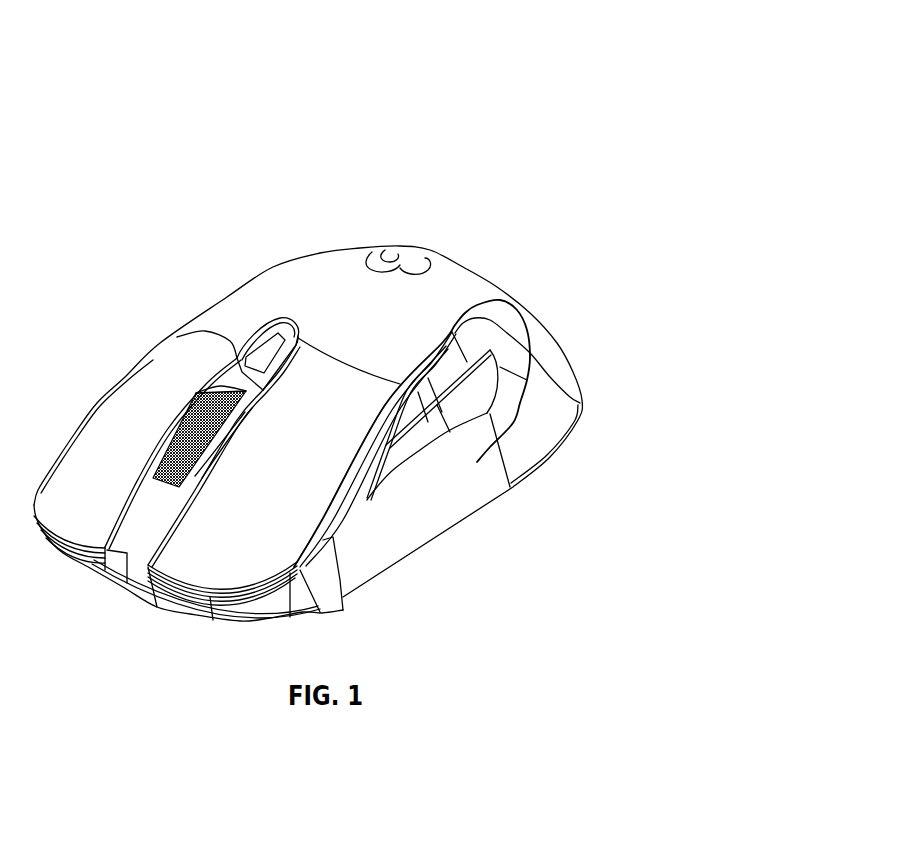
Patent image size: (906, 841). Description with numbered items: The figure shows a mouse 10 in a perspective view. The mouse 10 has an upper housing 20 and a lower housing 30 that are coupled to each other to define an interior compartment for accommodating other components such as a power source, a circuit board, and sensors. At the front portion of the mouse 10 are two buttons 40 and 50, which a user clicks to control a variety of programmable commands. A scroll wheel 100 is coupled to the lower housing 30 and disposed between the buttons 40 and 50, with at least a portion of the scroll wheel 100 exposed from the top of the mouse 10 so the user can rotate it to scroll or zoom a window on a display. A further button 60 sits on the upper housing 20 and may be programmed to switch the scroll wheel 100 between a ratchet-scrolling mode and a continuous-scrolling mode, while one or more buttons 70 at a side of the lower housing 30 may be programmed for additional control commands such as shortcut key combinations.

The mouse 10 is at (440, 98).
The upper housing 20 is at (267, 297).
The lower housing 30 is at (465, 497).
The button 40 is at (110, 417).
The button 50 is at (265, 567).
The button 60 is at (253, 347).
The buttons 70 is at (407, 455).
The scroll wheel 100 is at (190, 400).